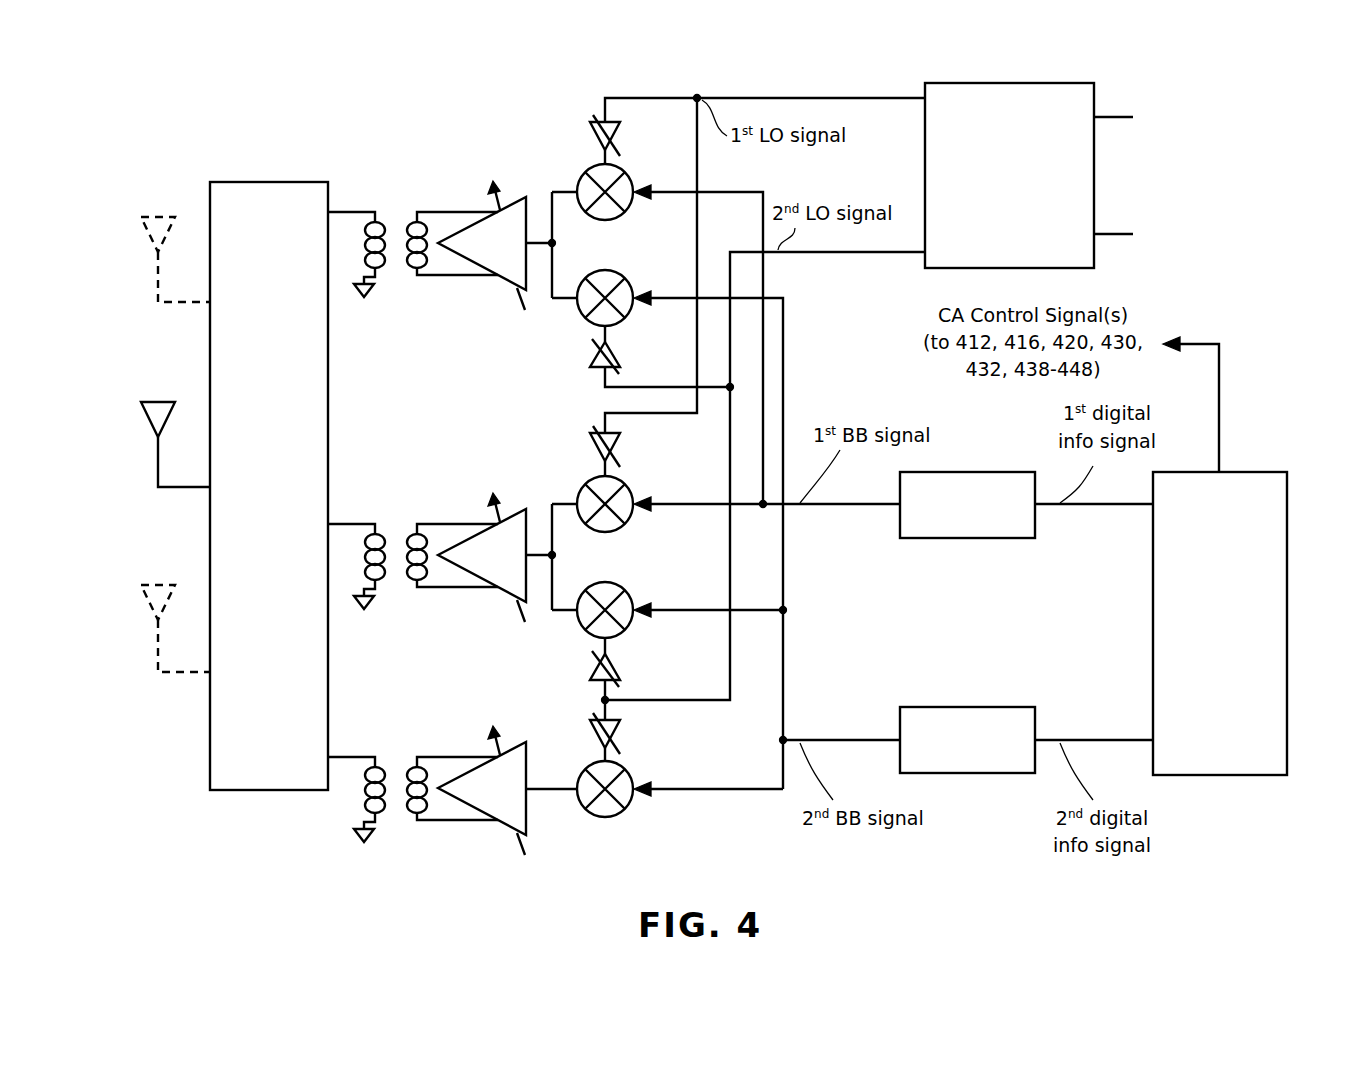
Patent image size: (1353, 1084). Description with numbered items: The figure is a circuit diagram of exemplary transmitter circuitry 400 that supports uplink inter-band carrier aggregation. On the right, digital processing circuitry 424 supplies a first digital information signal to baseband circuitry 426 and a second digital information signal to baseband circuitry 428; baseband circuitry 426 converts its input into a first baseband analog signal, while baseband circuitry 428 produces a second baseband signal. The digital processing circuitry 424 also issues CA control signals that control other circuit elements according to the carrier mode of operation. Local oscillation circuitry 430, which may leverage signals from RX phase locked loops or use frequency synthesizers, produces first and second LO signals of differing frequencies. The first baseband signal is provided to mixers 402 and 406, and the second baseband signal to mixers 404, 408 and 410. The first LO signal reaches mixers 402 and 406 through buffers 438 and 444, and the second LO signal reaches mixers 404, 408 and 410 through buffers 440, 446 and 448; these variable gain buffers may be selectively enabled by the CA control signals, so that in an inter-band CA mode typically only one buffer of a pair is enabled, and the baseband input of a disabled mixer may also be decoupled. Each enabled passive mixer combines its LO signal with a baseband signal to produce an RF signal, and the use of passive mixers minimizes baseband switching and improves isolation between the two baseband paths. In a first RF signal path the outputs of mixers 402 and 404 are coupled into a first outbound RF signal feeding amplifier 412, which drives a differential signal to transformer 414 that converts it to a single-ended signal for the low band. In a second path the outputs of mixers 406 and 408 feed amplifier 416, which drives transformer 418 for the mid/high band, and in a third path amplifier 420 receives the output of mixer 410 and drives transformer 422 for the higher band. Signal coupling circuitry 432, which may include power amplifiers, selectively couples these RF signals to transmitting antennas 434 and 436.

The transmitter circuitry 400 is at (208, 124).
The mixer 402 is at (593, 166).
The mixer 404 is at (622, 318).
The mixer 406 is at (593, 478).
The mixer 408 is at (622, 630).
The mixer 410 is at (633, 800).
The amplifier 412 is at (502, 283).
The transformer 414 is at (375, 212).
The amplifier 416 is at (502, 595).
The transformer 418 is at (375, 524).
The amplifier 420 is at (502, 828).
The transformer 422 is at (375, 757).
The digital processing circuitry 424 is at (1220, 556).
The baseband circuitry 426 is at (970, 540).
The baseband circuitry 428 is at (970, 775).
The local oscillation circuitry 430 is at (1098, 175).
The signal coupling circuitry 432 is at (269, 486).
The transmitting antenna 434 is at (158, 401).
The transmitting antenna 436 is at (158, 216).
The buffer 438 is at (617, 127).
The buffer 440 is at (592, 365).
The buffer 444 is at (617, 438).
The buffer 446 is at (592, 675).
The buffer 448 is at (617, 722).